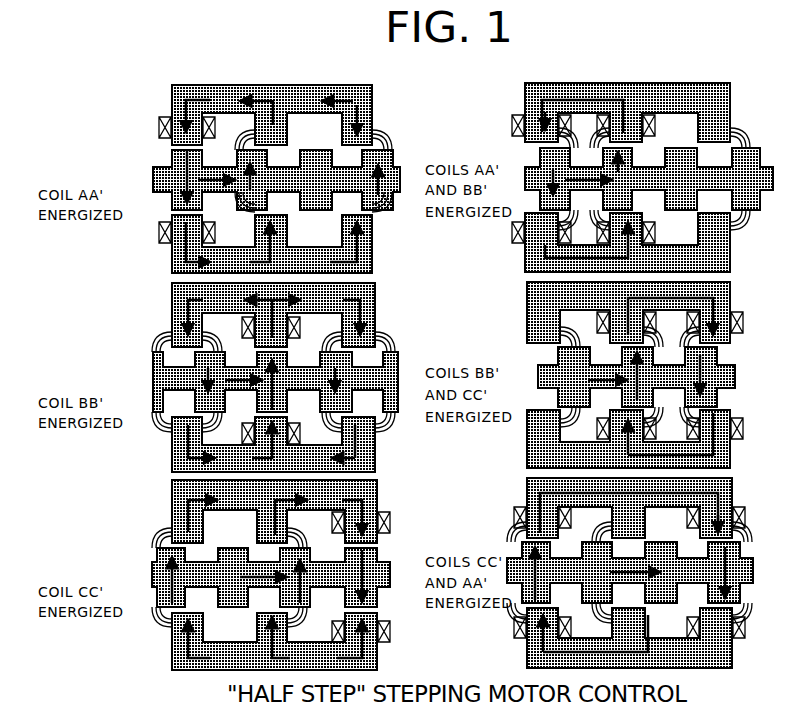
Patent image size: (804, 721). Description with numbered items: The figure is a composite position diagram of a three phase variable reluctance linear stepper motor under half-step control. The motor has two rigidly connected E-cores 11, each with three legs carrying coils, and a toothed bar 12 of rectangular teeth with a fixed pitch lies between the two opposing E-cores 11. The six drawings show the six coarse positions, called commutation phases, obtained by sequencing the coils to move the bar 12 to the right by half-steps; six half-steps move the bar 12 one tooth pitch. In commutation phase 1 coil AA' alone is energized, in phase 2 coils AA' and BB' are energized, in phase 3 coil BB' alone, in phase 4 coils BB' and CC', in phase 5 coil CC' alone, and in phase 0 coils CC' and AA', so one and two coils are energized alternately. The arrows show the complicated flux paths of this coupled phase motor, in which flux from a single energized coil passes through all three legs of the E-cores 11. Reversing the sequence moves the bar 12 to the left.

The E-core 11 is at (371, 93).
The bar 12 is at (388, 158).
The commutation phase 1 is at (232, 181).
The commutation phase 2 is at (618, 177).
The commutation phase 3 is at (237, 377).
The commutation phase 4 is at (611, 375).
The commutation phase 5 is at (241, 575).
The commutation phase 0 is at (612, 573).